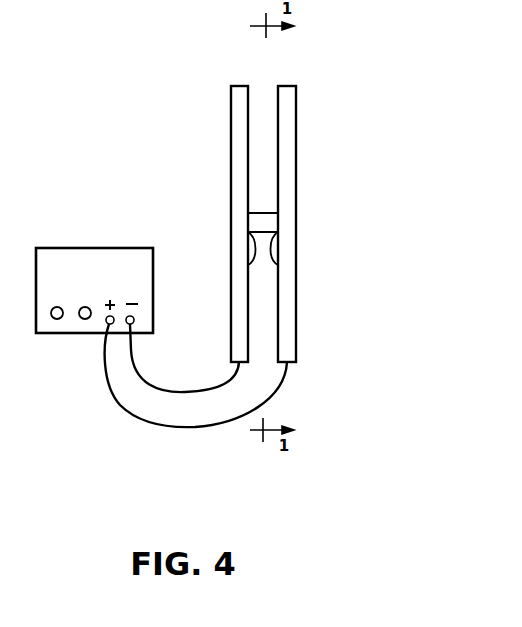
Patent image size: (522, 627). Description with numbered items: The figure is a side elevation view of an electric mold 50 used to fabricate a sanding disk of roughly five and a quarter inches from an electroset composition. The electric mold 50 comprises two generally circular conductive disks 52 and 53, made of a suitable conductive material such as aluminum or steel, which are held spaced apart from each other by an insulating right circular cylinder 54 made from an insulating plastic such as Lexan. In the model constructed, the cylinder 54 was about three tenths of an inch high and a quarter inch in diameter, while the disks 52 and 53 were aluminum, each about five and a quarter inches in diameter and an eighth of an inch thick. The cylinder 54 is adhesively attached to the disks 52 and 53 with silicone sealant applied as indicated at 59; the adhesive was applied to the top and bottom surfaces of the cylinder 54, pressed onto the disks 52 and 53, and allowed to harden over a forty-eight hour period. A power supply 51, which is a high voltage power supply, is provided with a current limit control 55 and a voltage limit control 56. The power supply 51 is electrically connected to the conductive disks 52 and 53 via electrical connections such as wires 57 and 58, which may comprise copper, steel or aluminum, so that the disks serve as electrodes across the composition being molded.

The electric mold 50 is at (344, 91).
The power supply 51 is at (95, 245).
The conductive disk 52 is at (228, 172).
The conductive disk 53 is at (300, 207).
The insulating right circular cylinder 54 is at (265, 210).
The current limit control 55 is at (55, 323).
The voltage limit control 56 is at (85, 324).
The wire 57 is at (160, 393).
The wire 58 is at (168, 433).
The silicone sealant adhesive 59 is at (250, 262).